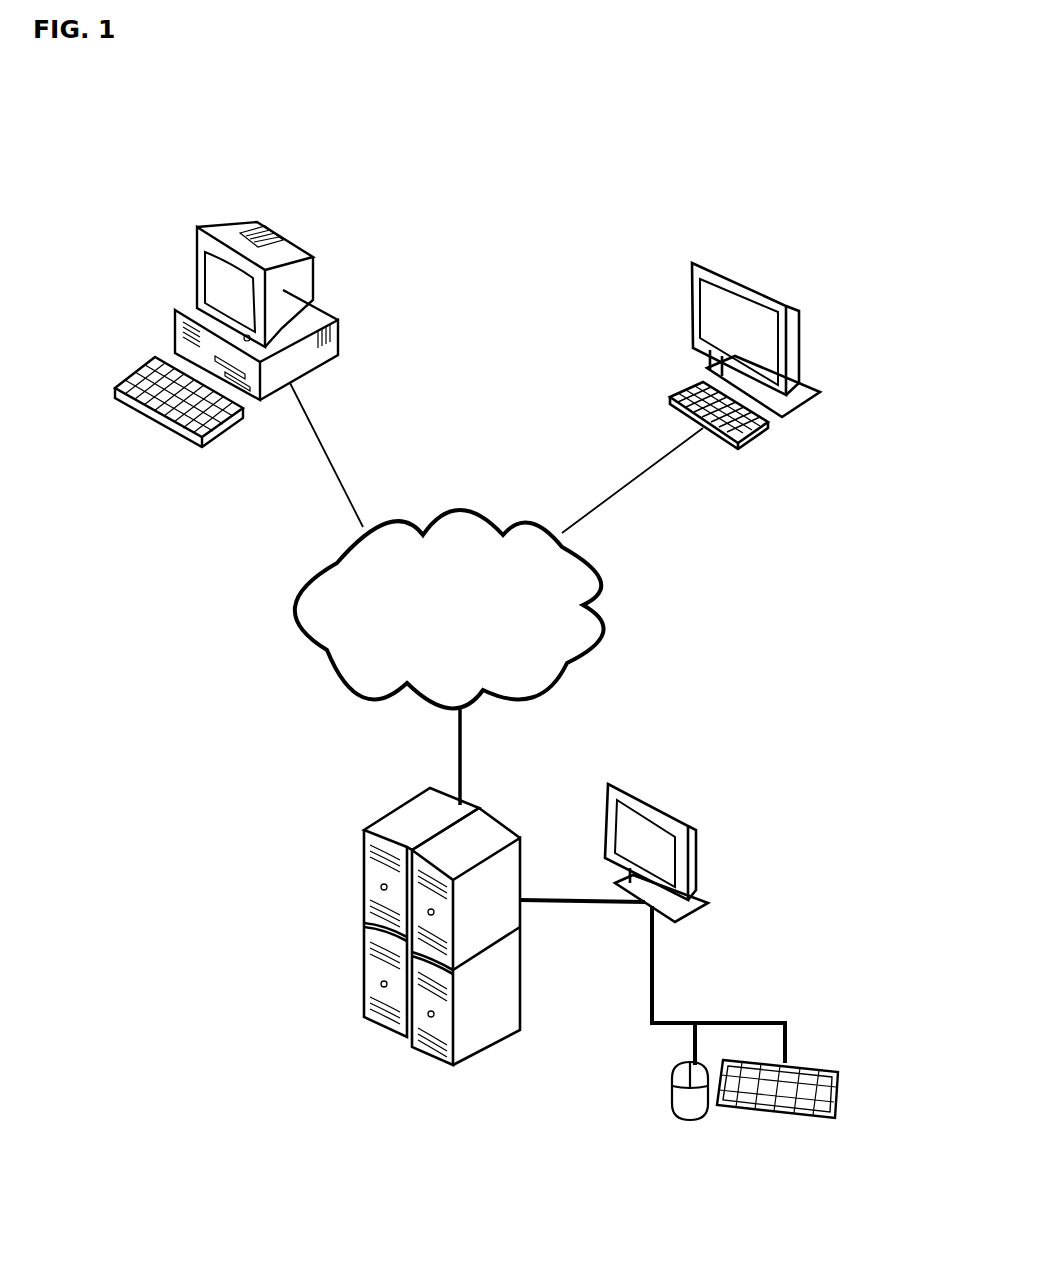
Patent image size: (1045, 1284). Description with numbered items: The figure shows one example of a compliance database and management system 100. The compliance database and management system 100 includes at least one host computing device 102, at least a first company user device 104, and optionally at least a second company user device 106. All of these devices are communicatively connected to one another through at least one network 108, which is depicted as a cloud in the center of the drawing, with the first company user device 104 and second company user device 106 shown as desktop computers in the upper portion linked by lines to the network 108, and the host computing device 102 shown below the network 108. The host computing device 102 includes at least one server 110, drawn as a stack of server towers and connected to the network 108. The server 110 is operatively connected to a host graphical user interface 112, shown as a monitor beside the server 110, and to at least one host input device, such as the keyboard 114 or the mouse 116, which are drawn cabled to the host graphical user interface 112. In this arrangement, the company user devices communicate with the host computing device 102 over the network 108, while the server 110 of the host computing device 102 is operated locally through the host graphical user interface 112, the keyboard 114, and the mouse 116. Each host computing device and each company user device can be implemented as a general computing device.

The compliance database and management system 100 is at (504, 356).
The host computing device 102 is at (330, 902).
The first company user device 104 is at (297, 293).
The second company user device 106 is at (802, 342).
The network 108 is at (603, 625).
The server 110 is at (428, 1058).
The host graphical user interface 112 is at (670, 786).
The keyboard 114 is at (808, 1131).
The mouse 116 is at (660, 1107).